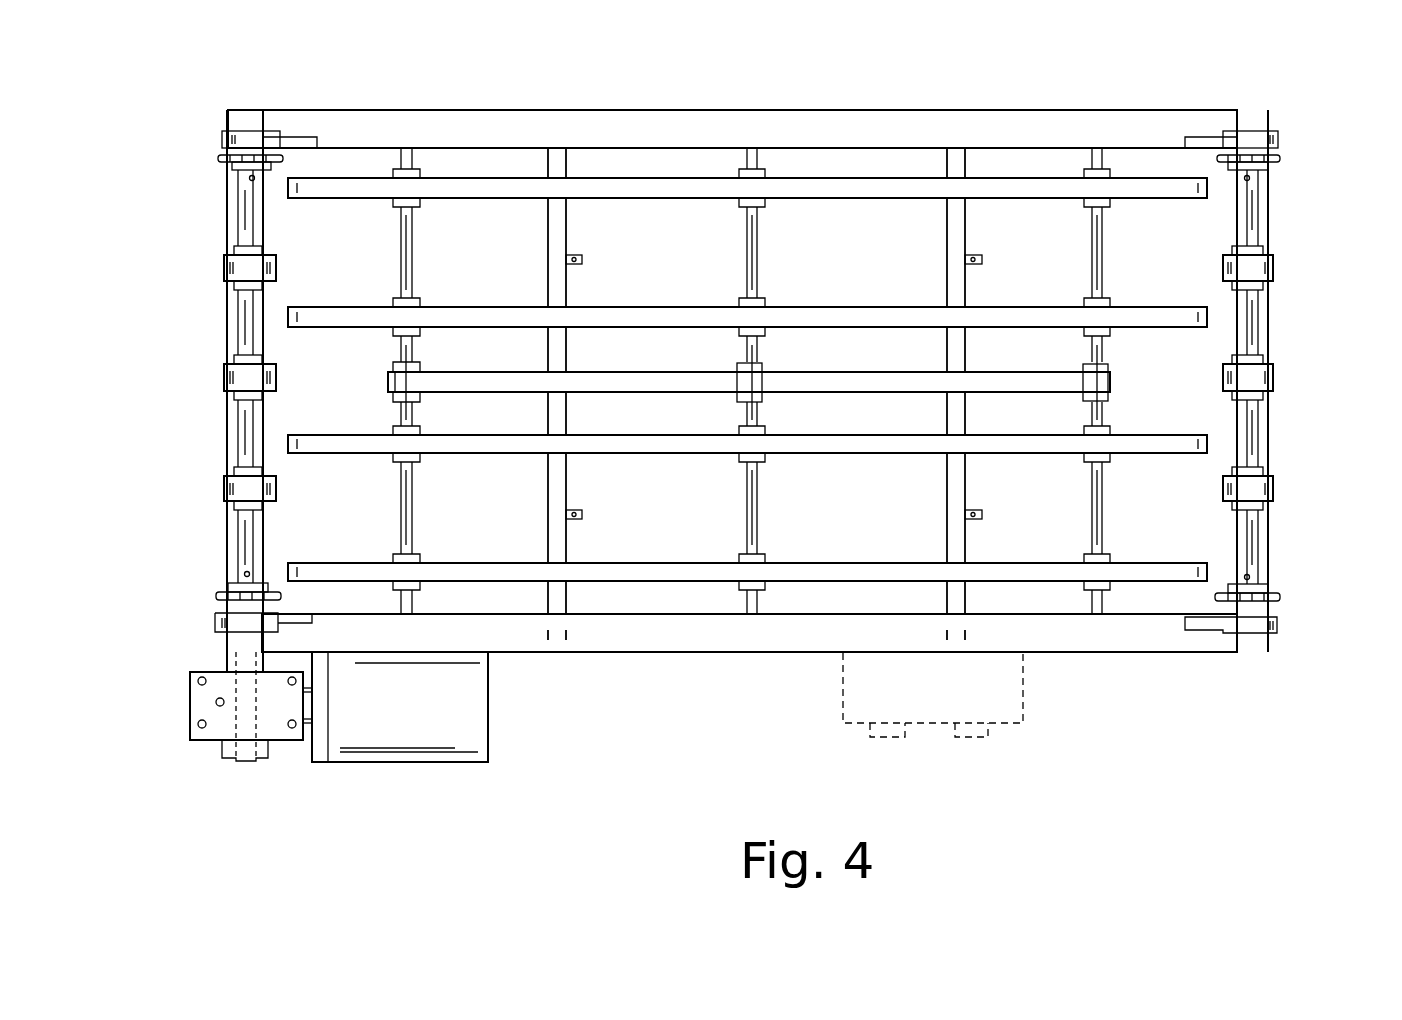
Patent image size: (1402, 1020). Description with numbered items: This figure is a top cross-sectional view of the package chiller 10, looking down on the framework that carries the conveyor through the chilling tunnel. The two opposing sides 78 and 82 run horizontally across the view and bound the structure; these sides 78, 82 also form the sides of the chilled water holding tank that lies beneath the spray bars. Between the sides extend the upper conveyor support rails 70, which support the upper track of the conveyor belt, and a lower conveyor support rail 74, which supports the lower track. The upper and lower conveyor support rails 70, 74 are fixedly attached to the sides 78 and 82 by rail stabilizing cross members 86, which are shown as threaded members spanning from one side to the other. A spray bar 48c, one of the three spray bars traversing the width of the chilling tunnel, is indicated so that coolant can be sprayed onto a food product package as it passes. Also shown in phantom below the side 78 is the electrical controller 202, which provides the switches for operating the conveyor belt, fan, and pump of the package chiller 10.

The package chiller 10 is at (1283, 159).
The spray bar 48c is at (938, 478).
The upper conveyor support rail 70 is at (682, 198).
The lower conveyor support rail 74 is at (797, 372).
The side 78 is at (728, 654).
The side 82 is at (705, 110).
The rail stabilizing cross member 86 is at (760, 280).
The electrical controller 202 is at (930, 710).